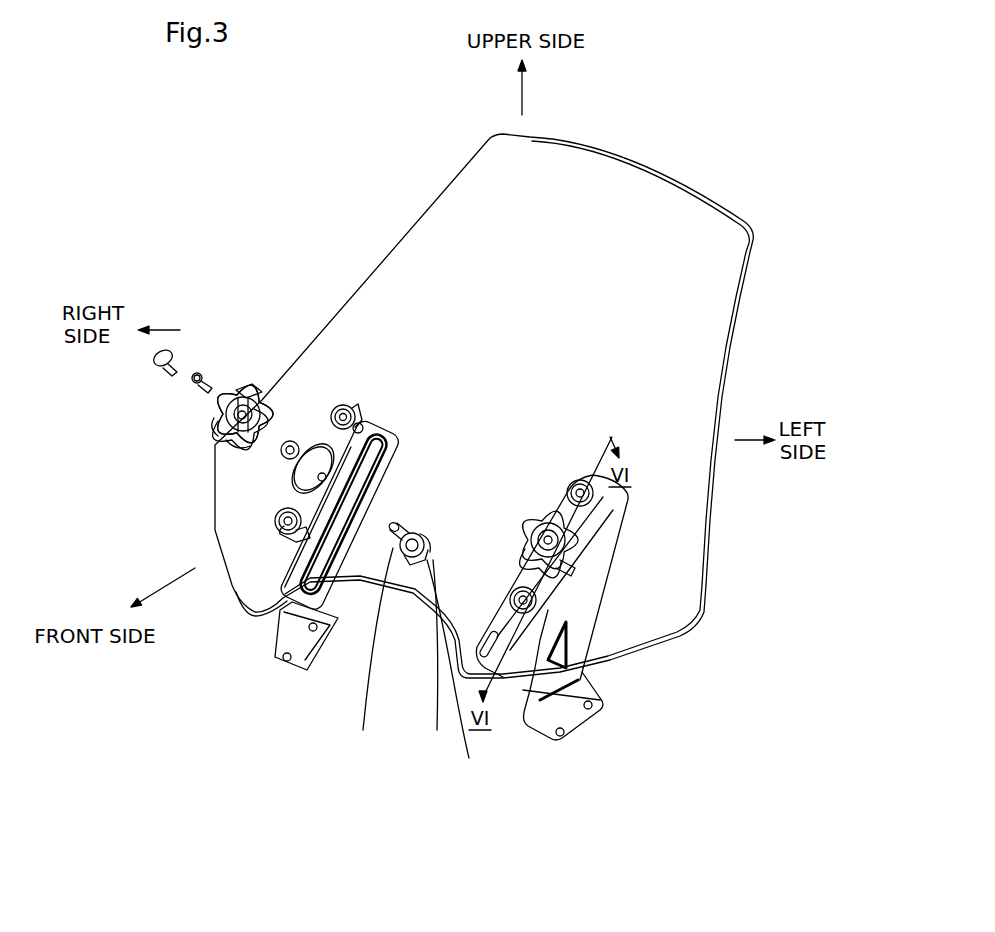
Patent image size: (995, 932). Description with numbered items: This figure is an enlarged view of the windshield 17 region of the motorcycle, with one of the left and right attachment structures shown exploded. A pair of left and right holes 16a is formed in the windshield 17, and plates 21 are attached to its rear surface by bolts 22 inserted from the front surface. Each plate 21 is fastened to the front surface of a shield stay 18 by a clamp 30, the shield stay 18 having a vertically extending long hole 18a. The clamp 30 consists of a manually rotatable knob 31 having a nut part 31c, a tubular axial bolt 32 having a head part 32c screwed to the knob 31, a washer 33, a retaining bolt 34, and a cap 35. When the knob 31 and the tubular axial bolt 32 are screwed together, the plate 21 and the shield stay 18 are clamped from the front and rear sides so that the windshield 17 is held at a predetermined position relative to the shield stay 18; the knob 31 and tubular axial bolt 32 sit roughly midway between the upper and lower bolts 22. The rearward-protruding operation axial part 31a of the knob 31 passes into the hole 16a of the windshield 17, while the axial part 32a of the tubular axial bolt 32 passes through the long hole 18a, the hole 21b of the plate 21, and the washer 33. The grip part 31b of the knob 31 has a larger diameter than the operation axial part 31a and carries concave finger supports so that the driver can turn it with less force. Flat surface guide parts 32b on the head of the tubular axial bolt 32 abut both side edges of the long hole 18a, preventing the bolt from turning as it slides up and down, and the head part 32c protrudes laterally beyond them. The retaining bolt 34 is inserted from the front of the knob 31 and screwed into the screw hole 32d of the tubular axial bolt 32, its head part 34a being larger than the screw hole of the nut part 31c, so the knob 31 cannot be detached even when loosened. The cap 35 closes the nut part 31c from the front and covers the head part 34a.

The windshield 17 is at (732, 248).
The shield stay 18 is at (439, 682).
The long hole 18a is at (285, 620).
The plate 21 is at (365, 392).
The hole 21b is at (325, 480).
The hole 16a is at (305, 452).
The bolt 22 is at (340, 402).
The clamp 30 is at (215, 352).
The knob 31 is at (261, 360).
The operation axial part 31a is at (230, 445).
The grip part 31b is at (222, 425).
The nut part 31c is at (240, 392).
The tubular axial bolt 32 is at (421, 653).
The axial part 32a is at (394, 548).
The flat surface guide parts 32b is at (410, 572).
The head part 32c is at (440, 658).
The screw hole 32d is at (370, 652).
The washer 33 is at (283, 455).
The retaining bolt 34 is at (186, 390).
The head part 34a is at (196, 373).
The cap 35 is at (158, 366).